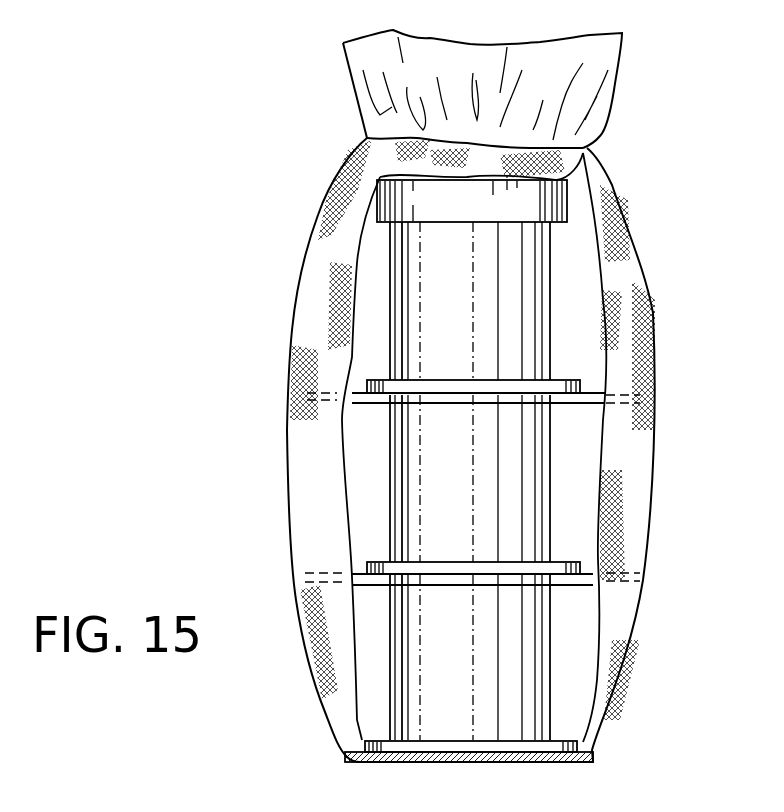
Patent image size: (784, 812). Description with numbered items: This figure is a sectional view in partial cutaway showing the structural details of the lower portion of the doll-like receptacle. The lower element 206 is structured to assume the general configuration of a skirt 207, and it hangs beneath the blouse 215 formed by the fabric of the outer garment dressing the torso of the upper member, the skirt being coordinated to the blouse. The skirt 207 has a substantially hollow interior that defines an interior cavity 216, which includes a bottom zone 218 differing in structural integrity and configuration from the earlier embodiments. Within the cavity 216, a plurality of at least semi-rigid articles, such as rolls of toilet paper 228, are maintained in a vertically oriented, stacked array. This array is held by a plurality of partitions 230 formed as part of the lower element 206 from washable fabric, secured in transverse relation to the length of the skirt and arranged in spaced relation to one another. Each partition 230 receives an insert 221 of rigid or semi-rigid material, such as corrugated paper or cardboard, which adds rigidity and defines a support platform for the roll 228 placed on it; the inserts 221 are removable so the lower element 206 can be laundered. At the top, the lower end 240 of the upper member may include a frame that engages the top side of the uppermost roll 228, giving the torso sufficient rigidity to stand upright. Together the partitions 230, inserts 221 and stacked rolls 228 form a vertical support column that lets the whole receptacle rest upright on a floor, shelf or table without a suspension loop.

The lower element 206 is at (280, 252).
The skirt 207 is at (293, 327).
The blouse 215 is at (350, 73).
The interior cavity 216 is at (580, 462).
The lower end of upper member 240 is at (547, 207).
The rolls of toilet paper 228 is at (487, 305).
The insert 221 is at (369, 386).
The partitions 230 is at (362, 402).
The bottom zone 218 is at (527, 762).